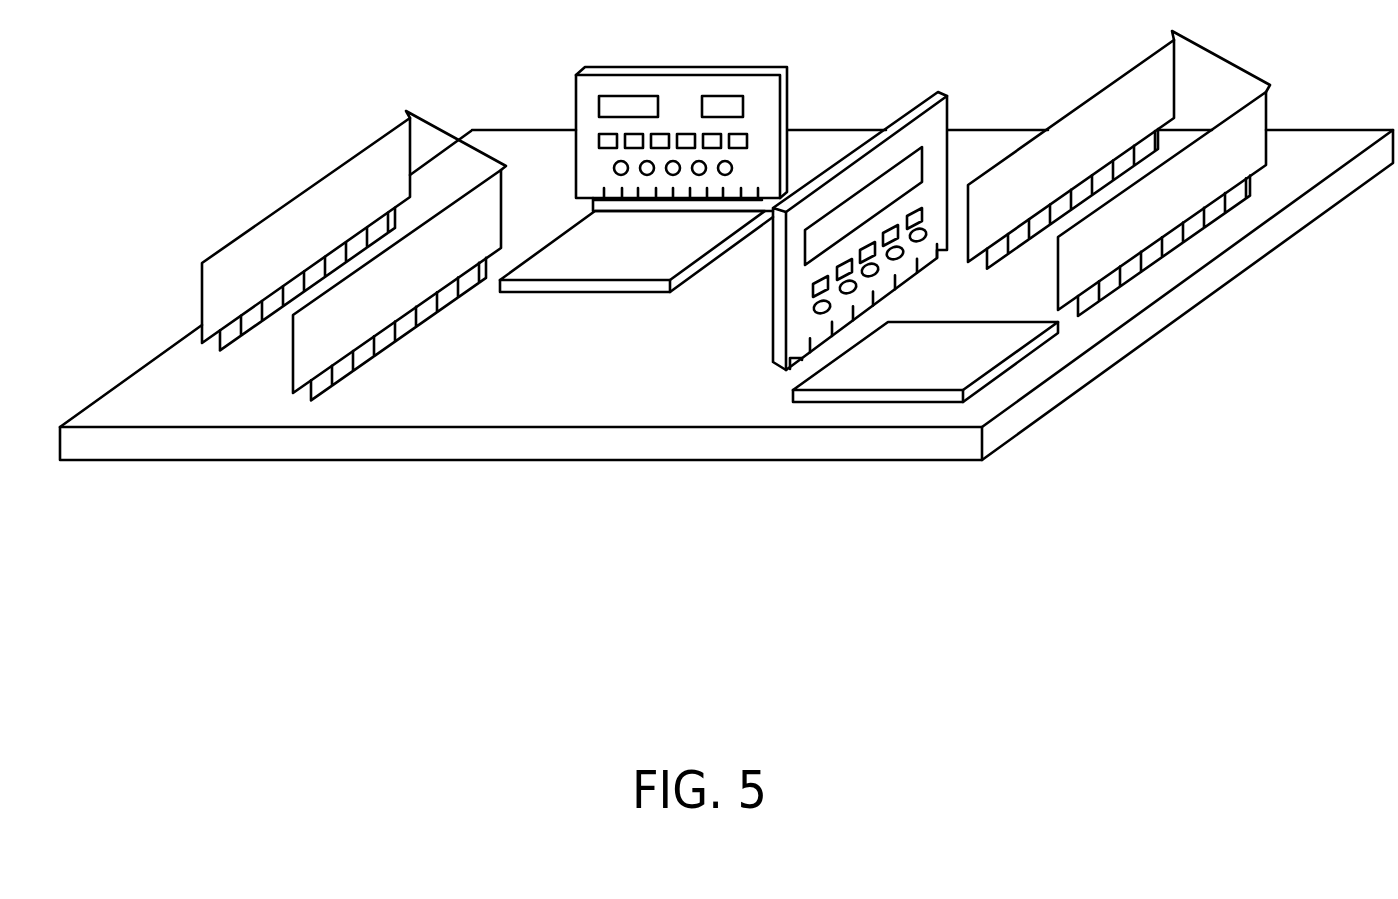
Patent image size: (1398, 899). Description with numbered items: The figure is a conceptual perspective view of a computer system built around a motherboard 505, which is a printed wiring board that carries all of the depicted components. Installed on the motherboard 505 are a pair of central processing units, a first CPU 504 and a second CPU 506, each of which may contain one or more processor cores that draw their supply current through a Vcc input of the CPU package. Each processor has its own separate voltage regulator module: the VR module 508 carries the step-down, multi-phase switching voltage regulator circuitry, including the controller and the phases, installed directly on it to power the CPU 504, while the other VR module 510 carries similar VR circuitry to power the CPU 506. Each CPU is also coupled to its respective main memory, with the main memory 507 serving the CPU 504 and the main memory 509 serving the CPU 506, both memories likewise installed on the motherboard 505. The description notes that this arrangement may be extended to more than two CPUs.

The CPU 504 is at (648, 284).
The motherboard 505 is at (1227, 266).
The CPU 506 is at (1013, 359).
The main memory 507 is at (457, 137).
The VR module 508 is at (788, 91).
The main memory 509 is at (1222, 56).
The VR module 510 is at (948, 112).